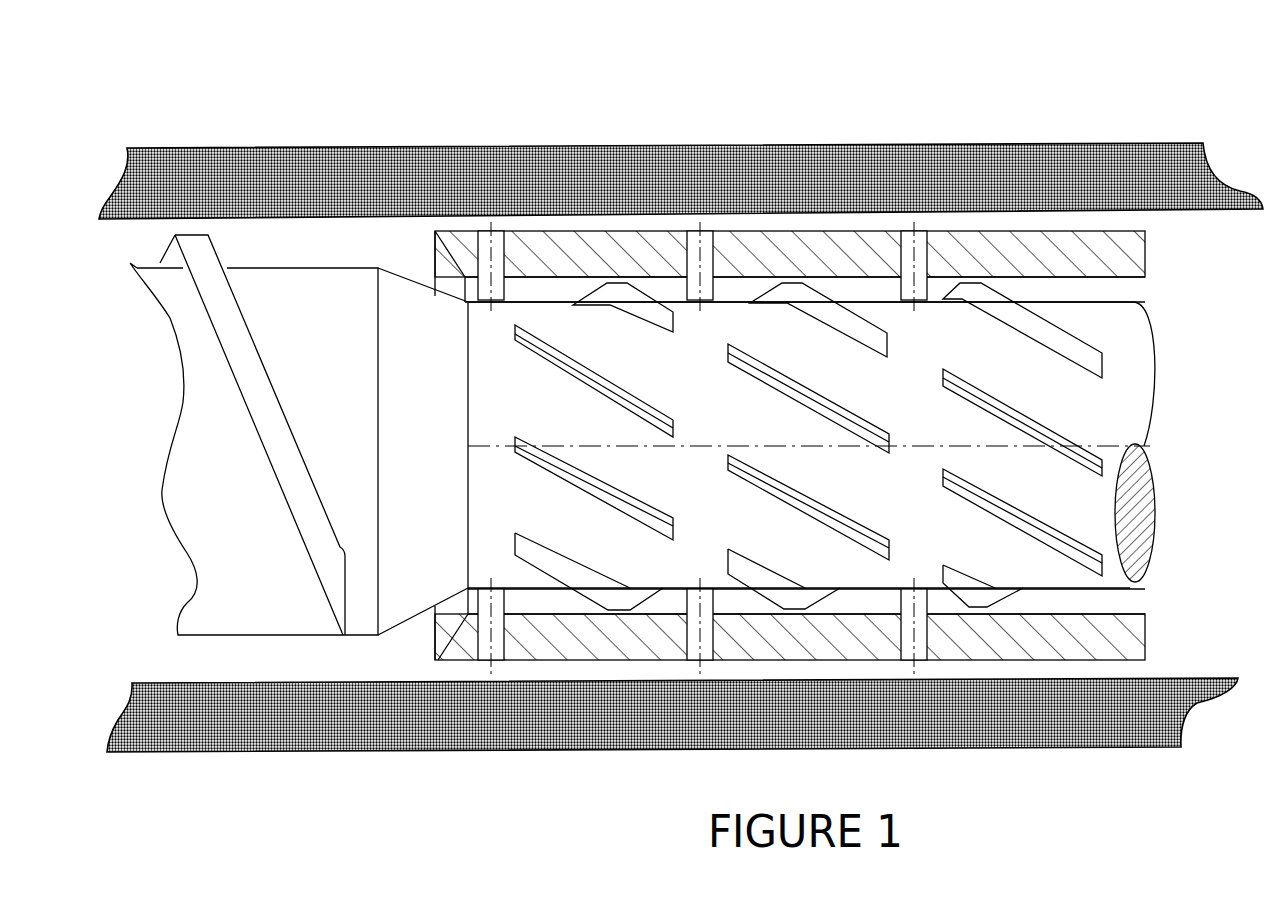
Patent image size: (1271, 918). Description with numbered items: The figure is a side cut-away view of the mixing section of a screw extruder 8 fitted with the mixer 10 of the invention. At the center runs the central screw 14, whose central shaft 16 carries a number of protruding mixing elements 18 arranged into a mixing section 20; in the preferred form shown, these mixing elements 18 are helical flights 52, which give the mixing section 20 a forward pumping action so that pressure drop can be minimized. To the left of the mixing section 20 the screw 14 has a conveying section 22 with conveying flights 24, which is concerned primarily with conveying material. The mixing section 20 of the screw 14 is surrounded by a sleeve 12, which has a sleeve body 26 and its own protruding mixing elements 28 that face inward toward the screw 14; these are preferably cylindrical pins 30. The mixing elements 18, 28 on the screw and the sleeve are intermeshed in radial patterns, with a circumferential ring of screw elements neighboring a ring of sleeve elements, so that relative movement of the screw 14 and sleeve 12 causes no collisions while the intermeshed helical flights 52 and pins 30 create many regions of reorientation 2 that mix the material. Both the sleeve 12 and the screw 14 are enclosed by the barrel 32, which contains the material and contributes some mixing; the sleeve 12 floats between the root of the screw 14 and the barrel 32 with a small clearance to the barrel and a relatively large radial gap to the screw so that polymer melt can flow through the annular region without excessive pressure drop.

The screw extruder 8 is at (467, 62).
The mixer 10 is at (550, 105).
The mixing section 20 is at (654, 100).
The protruding mixing elements 28 is at (702, 363).
The cylindrical pins 30 is at (708, 231).
The sleeve body 26 is at (842, 231).
The barrel 32 is at (1003, 180).
The sleeve 12 is at (718, 379).
The conveying section 22 is at (283, 435).
The conveying flights 24 is at (273, 438).
The regions of reorientation 2 is at (670, 339).
The protruding mixing elements 18 is at (808, 446).
The helical flights 52 is at (805, 312).
The central shaft 16 is at (844, 442).
The central screw 14 is at (1139, 427).